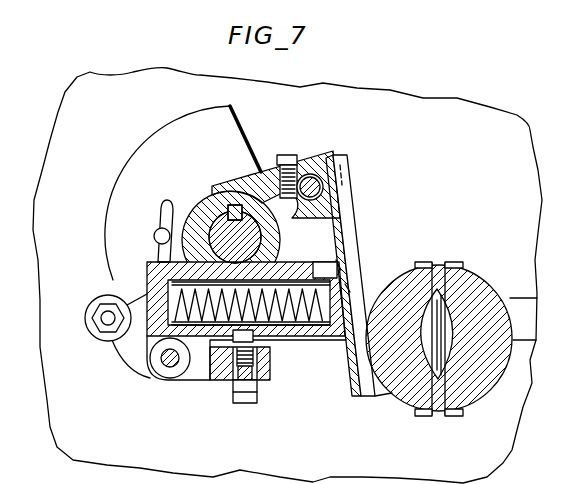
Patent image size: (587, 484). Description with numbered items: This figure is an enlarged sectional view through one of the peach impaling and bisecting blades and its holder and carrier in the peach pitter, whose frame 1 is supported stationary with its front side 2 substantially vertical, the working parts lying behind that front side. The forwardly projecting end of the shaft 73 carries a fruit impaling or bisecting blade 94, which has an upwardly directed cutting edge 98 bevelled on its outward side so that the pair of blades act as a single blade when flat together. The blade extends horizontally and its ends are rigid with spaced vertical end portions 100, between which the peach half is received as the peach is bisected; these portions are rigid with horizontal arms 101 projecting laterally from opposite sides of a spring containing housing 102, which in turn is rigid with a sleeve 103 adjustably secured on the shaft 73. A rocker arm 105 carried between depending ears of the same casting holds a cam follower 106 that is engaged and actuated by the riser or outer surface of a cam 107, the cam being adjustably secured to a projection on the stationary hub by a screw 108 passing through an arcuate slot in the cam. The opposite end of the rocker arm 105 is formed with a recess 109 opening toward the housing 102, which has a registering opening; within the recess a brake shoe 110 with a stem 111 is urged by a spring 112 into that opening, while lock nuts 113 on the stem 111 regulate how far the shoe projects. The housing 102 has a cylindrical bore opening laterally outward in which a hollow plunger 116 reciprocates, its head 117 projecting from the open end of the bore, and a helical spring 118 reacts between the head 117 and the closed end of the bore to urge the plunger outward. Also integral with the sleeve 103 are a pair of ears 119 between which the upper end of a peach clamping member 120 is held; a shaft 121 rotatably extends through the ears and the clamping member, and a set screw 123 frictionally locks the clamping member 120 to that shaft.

The frame 1 is at (523, 116).
The front side 2 is at (514, 163).
The shaft 73 is at (217, 212).
The fruit impaling or bisecting blade 94 is at (438, 418).
The cutting edge 98 is at (437, 264).
The vertical end portion 100 is at (420, 417).
The horizontal arm 101 is at (518, 298).
The spring containing housing 102 is at (283, 263).
The sleeve 103 is at (253, 172).
The rocker arm 105 is at (128, 349).
The cam follower 106 is at (97, 304).
The cam 107 is at (161, 197).
The screw 108 is at (155, 237).
The recess 109 is at (264, 368).
The brake shoe 110 is at (254, 341).
The stem 111 is at (227, 381).
The spring 112 is at (260, 356).
The lock nuts 113 is at (258, 393).
The hollow plunger 116 is at (314, 328).
The head 117 is at (348, 287).
The helical spring 118 is at (338, 265).
The ears 119 is at (342, 178).
The peach clamping member 120 is at (355, 222).
The shaft 121 is at (329, 158).
The set screw 123 is at (293, 157).